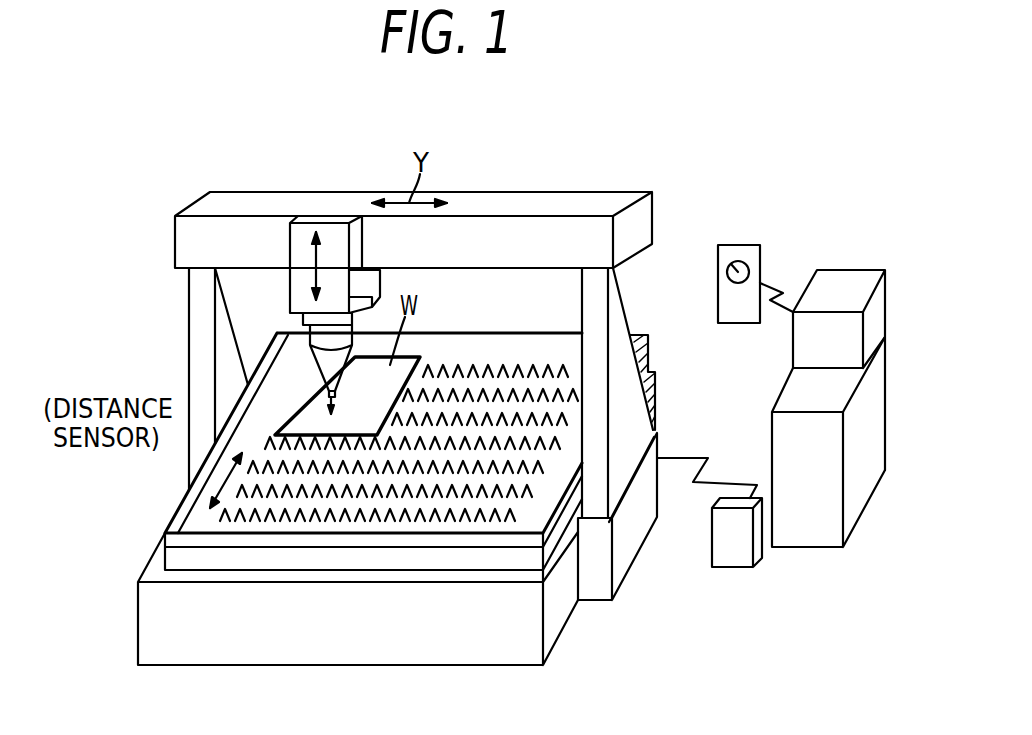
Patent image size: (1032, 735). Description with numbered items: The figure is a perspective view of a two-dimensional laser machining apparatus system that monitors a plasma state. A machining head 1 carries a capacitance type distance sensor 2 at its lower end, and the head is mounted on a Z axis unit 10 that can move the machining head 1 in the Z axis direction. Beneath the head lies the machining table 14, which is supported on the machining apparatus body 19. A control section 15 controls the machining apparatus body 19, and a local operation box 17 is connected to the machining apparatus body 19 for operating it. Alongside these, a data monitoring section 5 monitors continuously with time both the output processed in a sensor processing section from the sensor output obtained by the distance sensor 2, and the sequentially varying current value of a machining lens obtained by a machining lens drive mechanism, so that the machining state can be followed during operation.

The Z axis unit 10 is at (295, 285).
The machining head 1 is at (322, 356).
The capacitance type distance sensor 2 is at (329, 399).
The machining table 14 is at (185, 513).
The machining apparatus body 19 is at (227, 625).
The local operation box 17 is at (738, 250).
The control section 15 is at (853, 512).
The data monitoring section 5 is at (730, 552).